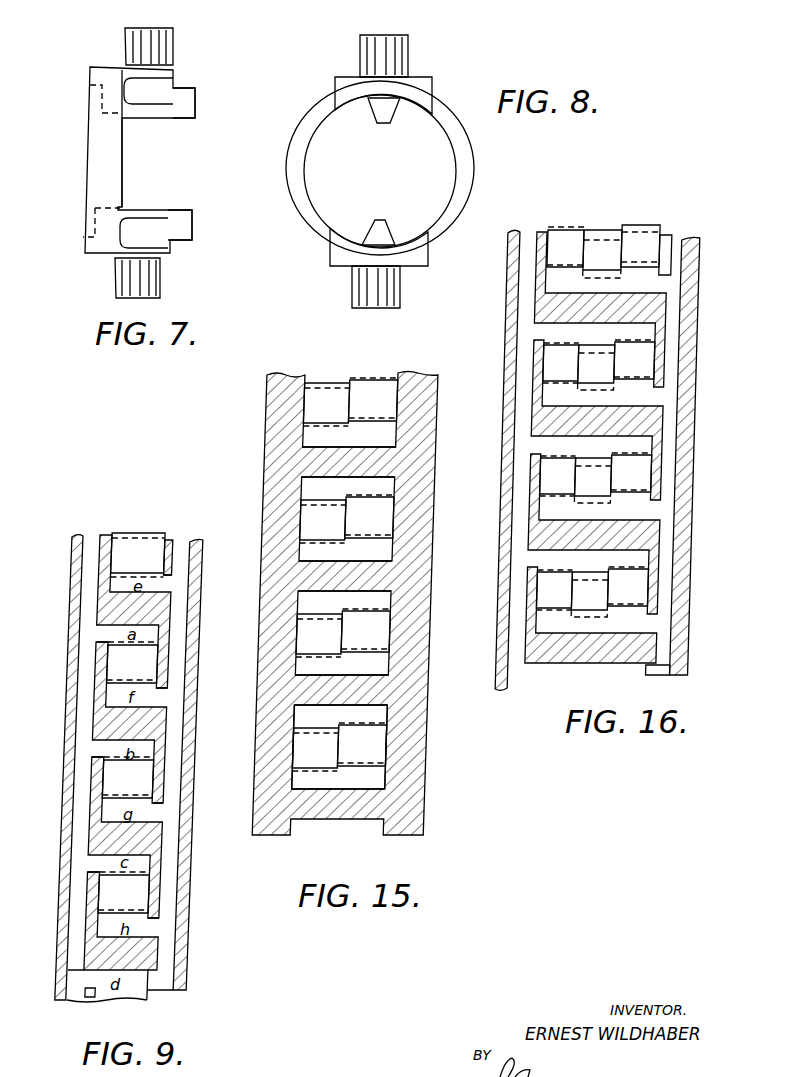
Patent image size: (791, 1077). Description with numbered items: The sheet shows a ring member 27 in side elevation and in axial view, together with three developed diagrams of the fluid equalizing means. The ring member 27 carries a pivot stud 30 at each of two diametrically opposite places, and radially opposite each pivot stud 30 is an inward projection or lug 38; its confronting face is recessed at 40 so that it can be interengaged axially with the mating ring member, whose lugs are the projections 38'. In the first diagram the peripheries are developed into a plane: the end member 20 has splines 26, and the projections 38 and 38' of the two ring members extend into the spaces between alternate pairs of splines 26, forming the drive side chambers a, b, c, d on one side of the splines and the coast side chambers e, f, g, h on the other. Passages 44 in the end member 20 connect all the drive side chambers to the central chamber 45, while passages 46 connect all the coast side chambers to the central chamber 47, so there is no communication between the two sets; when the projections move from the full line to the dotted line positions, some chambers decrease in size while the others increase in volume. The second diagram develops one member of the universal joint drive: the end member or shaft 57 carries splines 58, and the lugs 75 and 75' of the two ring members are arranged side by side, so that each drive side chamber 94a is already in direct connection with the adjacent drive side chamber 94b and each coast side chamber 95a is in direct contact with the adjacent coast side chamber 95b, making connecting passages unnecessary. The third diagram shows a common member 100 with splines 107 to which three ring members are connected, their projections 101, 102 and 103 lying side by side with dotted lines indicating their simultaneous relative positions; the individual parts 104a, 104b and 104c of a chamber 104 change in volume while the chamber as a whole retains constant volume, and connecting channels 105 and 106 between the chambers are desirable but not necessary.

In FIG. 9, the end member 20 is at (97, 812).
In FIG. 9, the splines 26 is at (131, 750).
In FIG. 7, the ring member 27 is at (98, 140).
In FIG. 8, the ring member 27 is at (465, 163).
In FIG. 7, the pivot stud 30 is at (173, 46).
In FIG. 8, the pivot stud 30 is at (405, 53).
In FIG. 7, the inward projection 38 is at (180, 164).
In FIG. 8, the inward projection 38 is at (394, 171).
In FIG. 9, the inward projection 38 is at (133, 669).
In FIG. 9, the inward projection 38' is at (134, 777).
In FIG. 7, the recess 40 is at (150, 175).
In FIG. 9, the passages 44 is at (108, 630).
In FIG. 9, the central chamber 45 is at (83, 768).
In FIG. 9, the passages 46 is at (163, 583).
In FIG. 9, the central chamber 47 is at (175, 760).
In FIG. 15, the end member 57 is at (268, 732).
In FIG. 15, the splines 58 is at (345, 604).
In FIG. 15, the lug 75 is at (289, 558).
In FIG. 15, the lug 75' is at (410, 557).
In FIG. 15, the drive side chamber 94a is at (312, 437).
In FIG. 15, the drive side chamber 94b is at (392, 437).
In FIG. 15, the coast side chamber 95a is at (307, 487).
In FIG. 15, the coast side chamber 95b is at (392, 488).
In FIG. 16, the common member 100 is at (667, 593).
In FIG. 16, the projection 101 is at (557, 358).
In FIG. 16, the projection 102 is at (597, 362).
In FIG. 16, the projection 103 is at (643, 367).
In FIG. 16, the chamber 104 is at (557, 280).
In FIG. 16, the chamber part 104a is at (560, 444).
In FIG. 16, the chamber part 104b is at (596, 447).
In FIG. 16, the chamber part 104c is at (634, 442).
In FIG. 16, the connecting channel 105 is at (522, 460).
In FIG. 16, the connecting channel 106 is at (668, 485).
In FIG. 16, the splines 107 is at (597, 447).